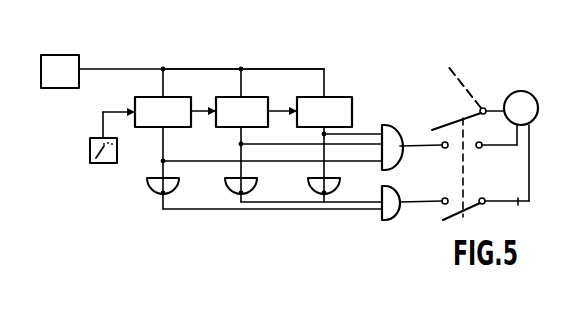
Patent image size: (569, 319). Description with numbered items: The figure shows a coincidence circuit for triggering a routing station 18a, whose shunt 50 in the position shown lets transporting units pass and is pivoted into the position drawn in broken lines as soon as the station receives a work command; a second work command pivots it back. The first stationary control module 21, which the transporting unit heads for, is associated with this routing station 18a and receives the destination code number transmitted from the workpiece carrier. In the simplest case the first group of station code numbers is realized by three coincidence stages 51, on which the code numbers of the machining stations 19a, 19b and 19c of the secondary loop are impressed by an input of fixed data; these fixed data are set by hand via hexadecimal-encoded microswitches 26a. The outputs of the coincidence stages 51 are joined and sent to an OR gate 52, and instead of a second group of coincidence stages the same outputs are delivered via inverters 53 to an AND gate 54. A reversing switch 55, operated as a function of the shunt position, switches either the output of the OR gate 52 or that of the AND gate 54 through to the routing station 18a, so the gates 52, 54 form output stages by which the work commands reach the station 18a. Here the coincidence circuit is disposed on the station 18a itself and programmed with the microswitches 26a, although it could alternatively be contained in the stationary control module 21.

The first stationary control module 21 is at (61, 78).
The hexadecimal-encoded microswitches 26a is at (90, 149).
The machining station 19a is at (163, 112).
The machining station 19b is at (242, 112).
The machining station 19c is at (324, 112).
The coincidence stages 51 is at (296, 100).
The inverters 53 is at (312, 184).
The OR gate 52 is at (386, 125).
The AND gate 54 is at (388, 212).
The shunt 50 is at (442, 123).
The reversing switch 55 is at (465, 163).
The routing station 18a is at (518, 100).